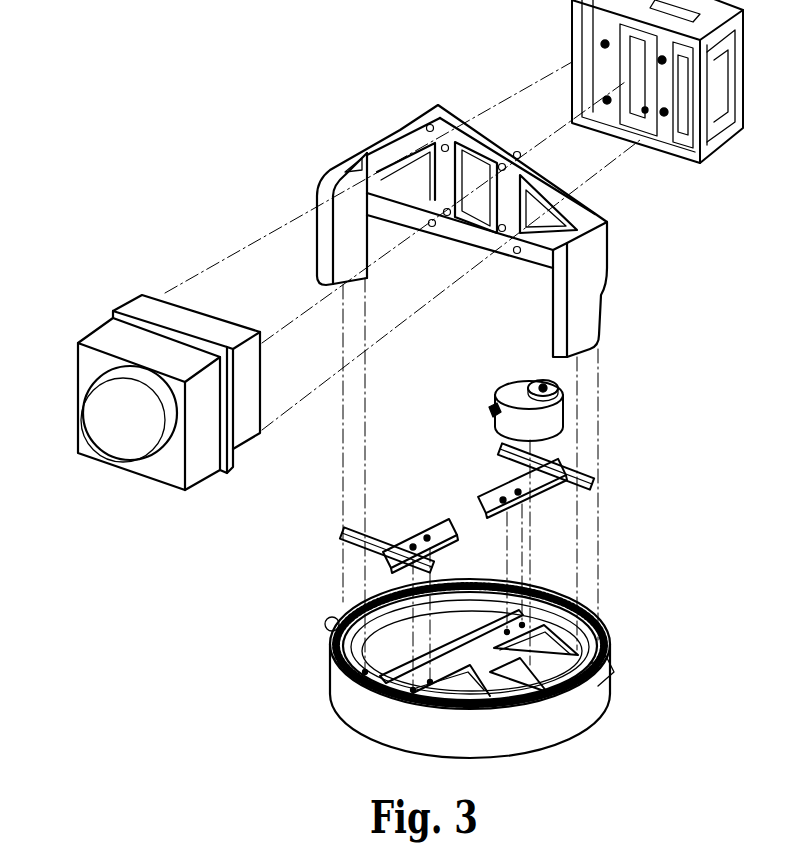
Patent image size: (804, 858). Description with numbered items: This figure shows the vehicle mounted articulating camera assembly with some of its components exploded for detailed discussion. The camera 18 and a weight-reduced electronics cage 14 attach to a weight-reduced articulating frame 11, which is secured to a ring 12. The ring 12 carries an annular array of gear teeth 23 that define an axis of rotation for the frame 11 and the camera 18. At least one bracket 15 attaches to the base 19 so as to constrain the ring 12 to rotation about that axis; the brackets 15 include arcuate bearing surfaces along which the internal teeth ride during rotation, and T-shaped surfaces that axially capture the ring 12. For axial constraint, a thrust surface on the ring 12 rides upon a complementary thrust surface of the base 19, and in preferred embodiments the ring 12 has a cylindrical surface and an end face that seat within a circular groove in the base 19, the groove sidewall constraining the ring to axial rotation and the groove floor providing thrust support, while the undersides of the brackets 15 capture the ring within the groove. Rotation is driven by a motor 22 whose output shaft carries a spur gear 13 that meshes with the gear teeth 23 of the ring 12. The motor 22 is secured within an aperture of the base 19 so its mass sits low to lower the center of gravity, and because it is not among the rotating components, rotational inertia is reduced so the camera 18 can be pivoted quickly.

The articulating frame 11 is at (398, 130).
The ring 12 is at (328, 626).
The spur gear 13 is at (545, 380).
The electronics cage 14 is at (568, 16).
The bracket 15 is at (480, 498).
The camera 18 is at (126, 297).
The base 19 is at (330, 693).
The motor 22 is at (495, 420).
The gear teeth 23 is at (546, 588).